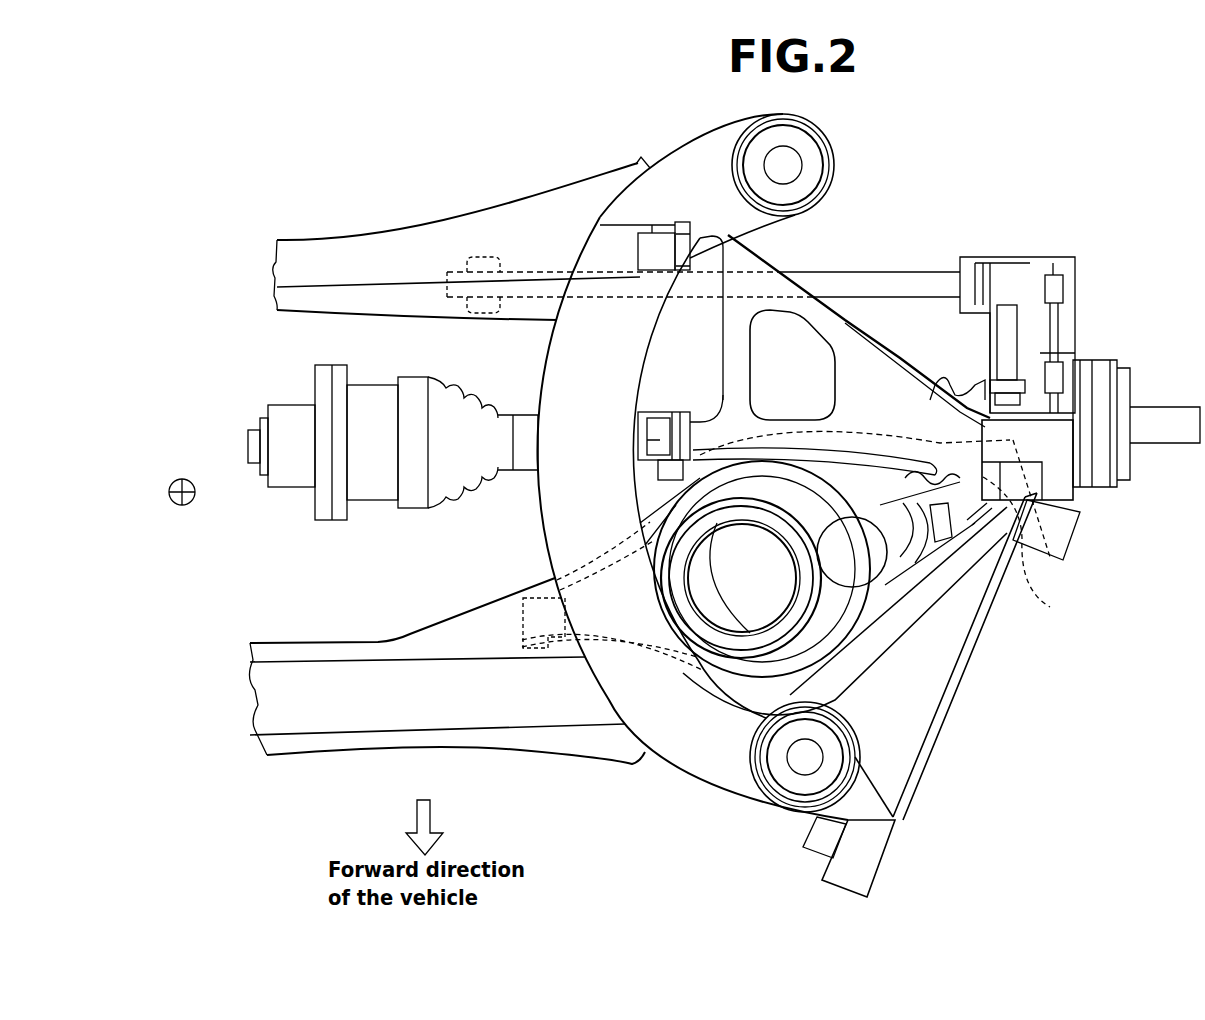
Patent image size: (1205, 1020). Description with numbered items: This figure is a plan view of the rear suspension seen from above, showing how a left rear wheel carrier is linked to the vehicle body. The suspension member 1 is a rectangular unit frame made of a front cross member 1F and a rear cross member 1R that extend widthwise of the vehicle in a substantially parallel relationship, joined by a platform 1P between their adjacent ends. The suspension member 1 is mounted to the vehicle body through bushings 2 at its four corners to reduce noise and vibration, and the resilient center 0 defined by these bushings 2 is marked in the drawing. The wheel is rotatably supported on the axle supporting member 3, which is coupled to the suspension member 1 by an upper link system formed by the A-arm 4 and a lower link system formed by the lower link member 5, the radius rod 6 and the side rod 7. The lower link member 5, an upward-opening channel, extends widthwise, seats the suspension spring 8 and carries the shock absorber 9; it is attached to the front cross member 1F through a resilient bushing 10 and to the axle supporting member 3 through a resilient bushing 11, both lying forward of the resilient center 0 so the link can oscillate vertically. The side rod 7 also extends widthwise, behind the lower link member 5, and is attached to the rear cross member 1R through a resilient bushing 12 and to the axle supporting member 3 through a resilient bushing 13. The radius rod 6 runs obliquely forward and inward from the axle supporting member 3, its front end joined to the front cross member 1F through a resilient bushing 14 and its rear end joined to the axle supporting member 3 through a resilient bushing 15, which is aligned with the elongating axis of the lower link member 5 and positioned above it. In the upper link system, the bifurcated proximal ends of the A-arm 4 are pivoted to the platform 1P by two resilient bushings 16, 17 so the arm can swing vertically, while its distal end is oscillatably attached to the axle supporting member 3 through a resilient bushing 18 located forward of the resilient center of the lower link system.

The resilient center 0 is at (186, 478).
The suspension member 1 is at (412, 461).
The rear cross member 1R is at (272, 275).
The front cross member 1F is at (282, 703).
The platform 1P is at (673, 152).
The bushing 2 is at (817, 150).
The axle supporting member 3 is at (1103, 362).
The A-arm 4 is at (848, 322).
The lower link member 5 is at (900, 640).
The radius rod 6 is at (917, 748).
The side rod 7 is at (900, 268).
The suspension spring 8 is at (717, 640).
The shock absorber 9 is at (955, 600).
The resilient bushing 10 is at (530, 630).
The resilient bushing 11 is at (1050, 606).
The resilient bushing 12 is at (497, 257).
The resilient bushing 13 is at (1012, 258).
The resilient bushing 14 is at (877, 860).
The resilient bushing 15 is at (1043, 500).
The resilient bushing 16 is at (657, 435).
The resilient bushing 17 is at (638, 248).
The resilient bushing 18 is at (967, 380).